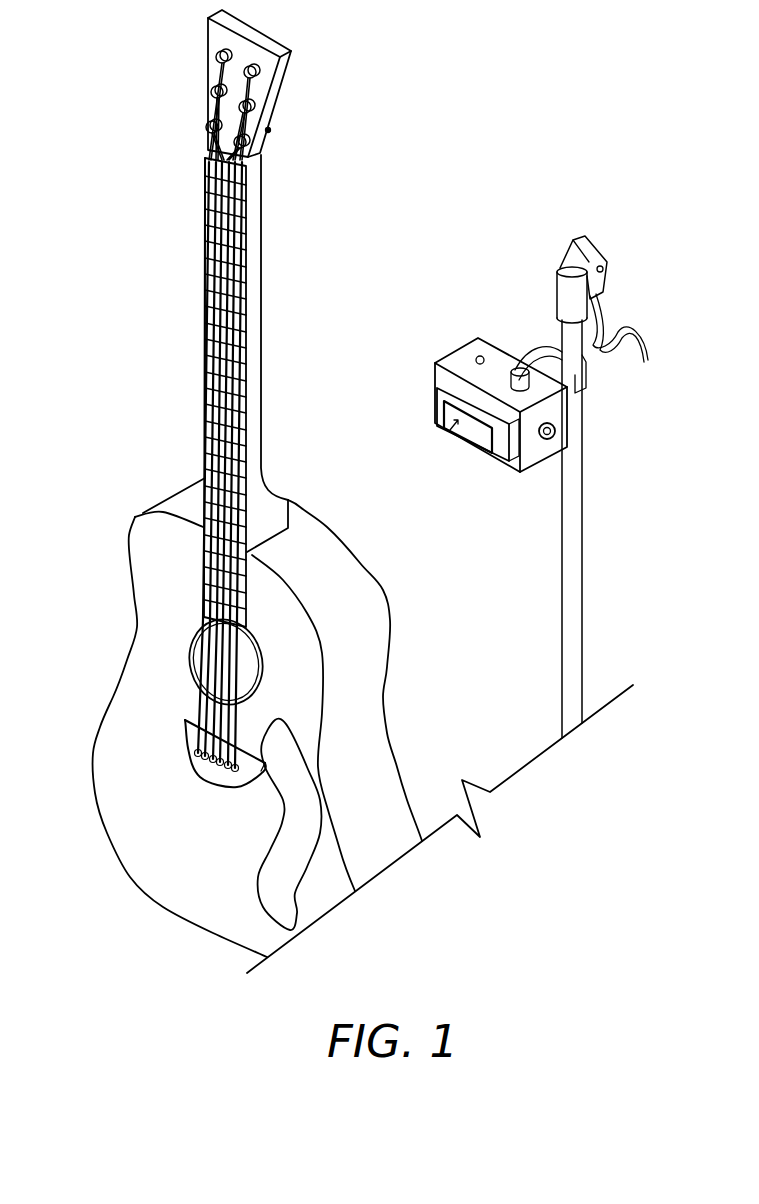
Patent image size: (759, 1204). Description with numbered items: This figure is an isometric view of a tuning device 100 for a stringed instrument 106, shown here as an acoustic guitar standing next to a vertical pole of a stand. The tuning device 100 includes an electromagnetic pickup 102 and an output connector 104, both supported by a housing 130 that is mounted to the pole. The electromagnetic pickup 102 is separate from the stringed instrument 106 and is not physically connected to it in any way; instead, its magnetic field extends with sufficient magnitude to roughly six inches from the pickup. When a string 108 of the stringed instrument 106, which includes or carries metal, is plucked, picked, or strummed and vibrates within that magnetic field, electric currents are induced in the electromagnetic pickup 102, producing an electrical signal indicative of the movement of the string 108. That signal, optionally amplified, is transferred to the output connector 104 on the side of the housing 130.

The tuning device 100 is at (432, 342).
The electromagnetic pickup 102 is at (447, 433).
The output connector 104 is at (555, 432).
The stringed instrument 106 is at (261, 262).
The string 108 is at (205, 352).
The housing 130 is at (500, 362).